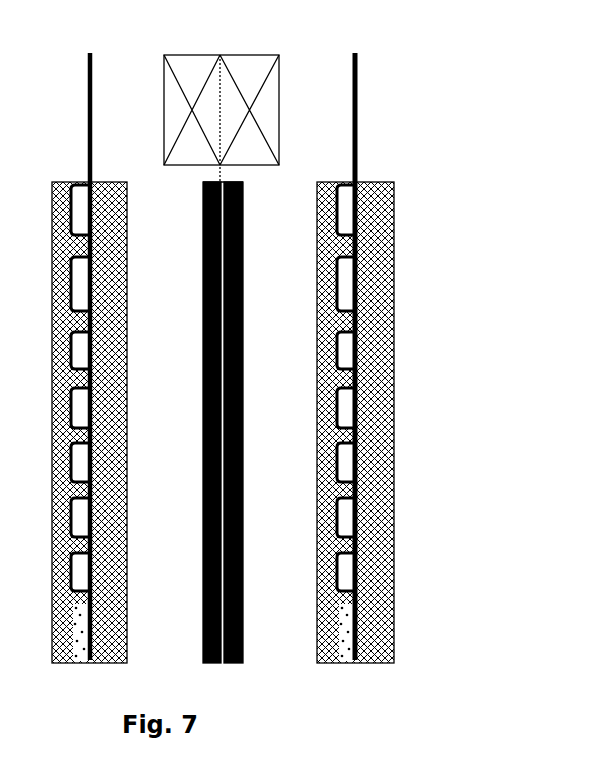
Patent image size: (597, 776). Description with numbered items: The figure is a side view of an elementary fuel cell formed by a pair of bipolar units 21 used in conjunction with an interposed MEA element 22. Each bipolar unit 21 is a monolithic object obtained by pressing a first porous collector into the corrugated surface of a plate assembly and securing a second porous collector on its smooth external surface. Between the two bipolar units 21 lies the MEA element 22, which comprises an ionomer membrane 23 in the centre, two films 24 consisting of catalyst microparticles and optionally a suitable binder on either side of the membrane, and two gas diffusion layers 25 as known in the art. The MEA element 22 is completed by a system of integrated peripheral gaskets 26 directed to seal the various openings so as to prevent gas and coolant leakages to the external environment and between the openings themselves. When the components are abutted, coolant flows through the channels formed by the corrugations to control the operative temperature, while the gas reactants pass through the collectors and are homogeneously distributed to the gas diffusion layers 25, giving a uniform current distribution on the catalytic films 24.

The bipolar unit 21 is at (71, 137).
The electrolyte space 22 is at (263, 256).
The ionomer membrane 23 is at (226, 182).
The films of catalyst microparticles 24 is at (228, 328).
The gas diffusion layers 25 is at (244, 395).
The integrated peripheral gaskets 26 is at (242, 71).